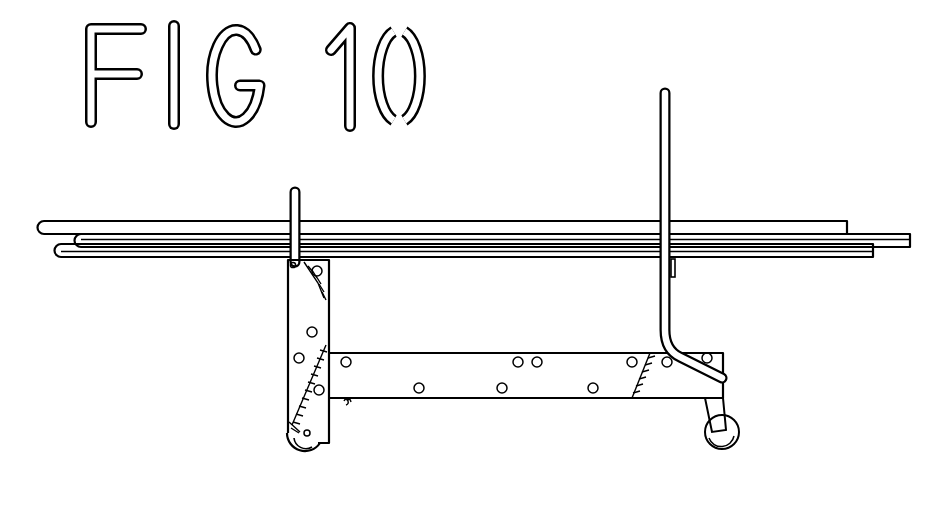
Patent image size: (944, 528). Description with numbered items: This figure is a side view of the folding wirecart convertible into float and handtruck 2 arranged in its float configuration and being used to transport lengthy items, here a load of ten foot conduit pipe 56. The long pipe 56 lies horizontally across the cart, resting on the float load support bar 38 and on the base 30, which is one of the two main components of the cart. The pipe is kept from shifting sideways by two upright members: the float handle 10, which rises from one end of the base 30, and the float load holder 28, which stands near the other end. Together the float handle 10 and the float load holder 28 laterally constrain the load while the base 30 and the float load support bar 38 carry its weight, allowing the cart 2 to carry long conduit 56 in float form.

The folding wirecart convertible into float and handtruck 2 is at (287, 378).
The float handle 10 is at (671, 160).
The float load holder 28 is at (300, 205).
The base 30 is at (330, 300).
The float load support bar 38 is at (676, 264).
The conduit pipe 56 is at (456, 222).